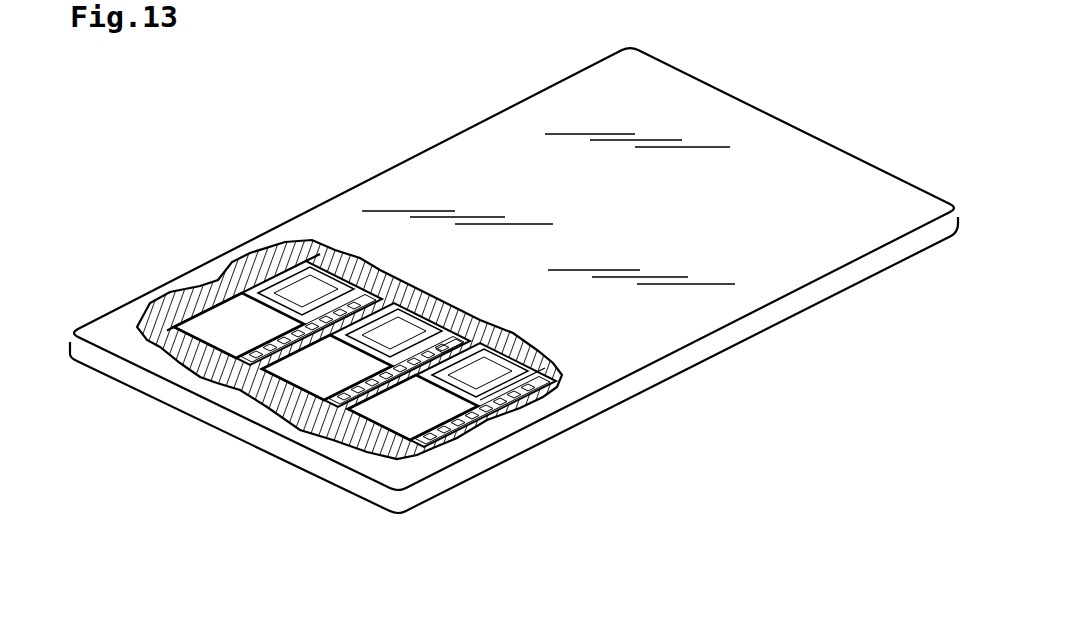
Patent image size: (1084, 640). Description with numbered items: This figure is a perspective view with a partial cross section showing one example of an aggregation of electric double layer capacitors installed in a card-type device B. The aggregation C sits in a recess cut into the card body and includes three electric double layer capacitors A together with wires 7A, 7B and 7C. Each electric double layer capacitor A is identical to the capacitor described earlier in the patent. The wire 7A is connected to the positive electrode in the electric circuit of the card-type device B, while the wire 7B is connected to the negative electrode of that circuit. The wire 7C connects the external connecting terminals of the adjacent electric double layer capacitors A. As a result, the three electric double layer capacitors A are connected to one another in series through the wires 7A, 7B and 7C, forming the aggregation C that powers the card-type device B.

The card-type device B is at (379, 156).
The electric double layer capacitor A is at (225, 333).
The aggregation C is at (311, 543).
The wire 7A is at (288, 258).
The wire 7B is at (532, 378).
The wire 7C is at (452, 350).